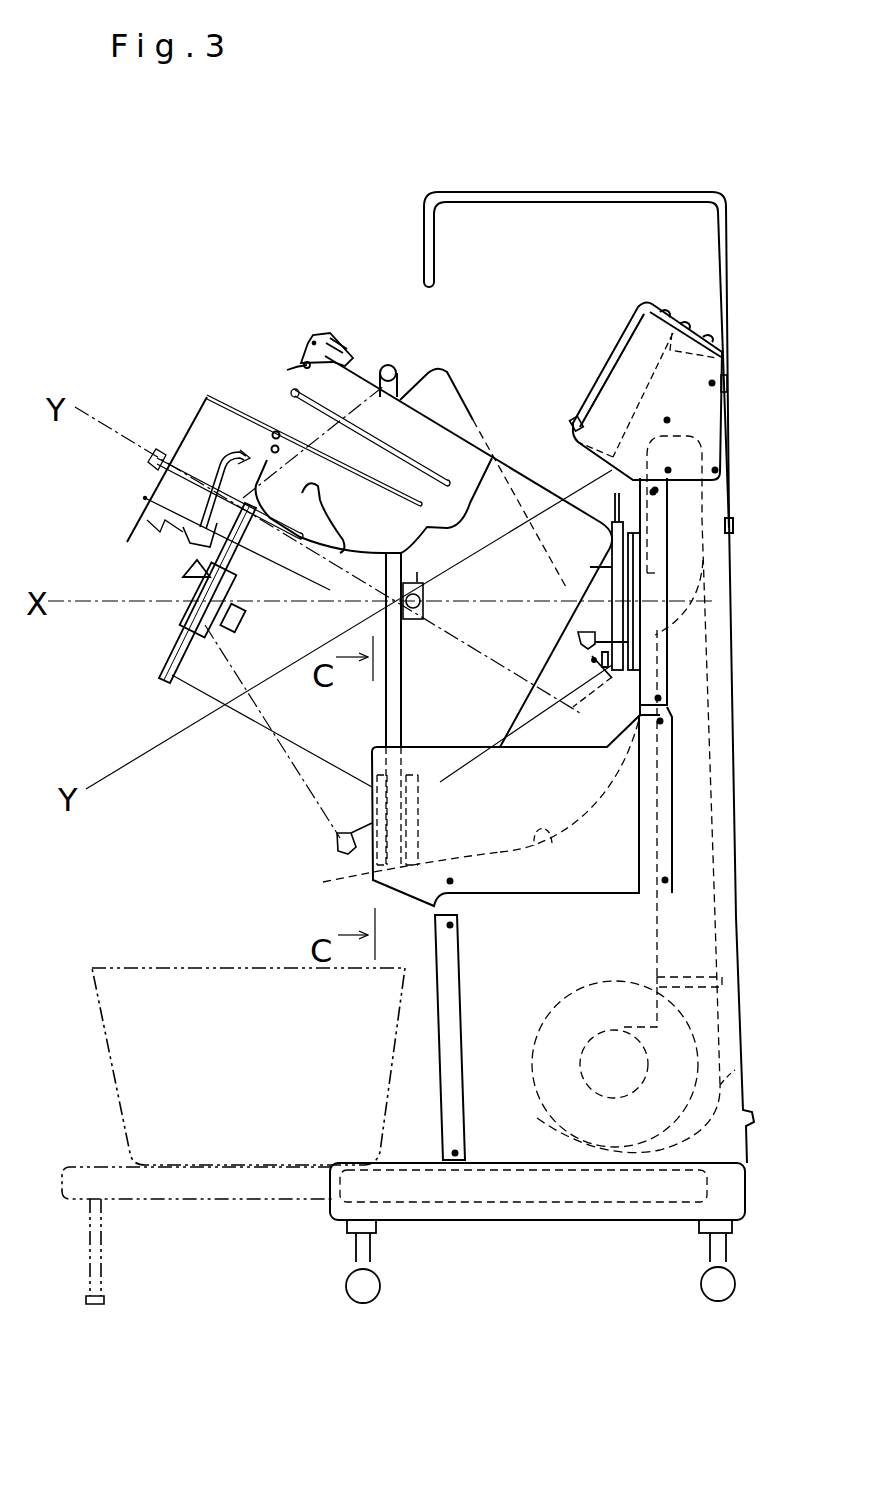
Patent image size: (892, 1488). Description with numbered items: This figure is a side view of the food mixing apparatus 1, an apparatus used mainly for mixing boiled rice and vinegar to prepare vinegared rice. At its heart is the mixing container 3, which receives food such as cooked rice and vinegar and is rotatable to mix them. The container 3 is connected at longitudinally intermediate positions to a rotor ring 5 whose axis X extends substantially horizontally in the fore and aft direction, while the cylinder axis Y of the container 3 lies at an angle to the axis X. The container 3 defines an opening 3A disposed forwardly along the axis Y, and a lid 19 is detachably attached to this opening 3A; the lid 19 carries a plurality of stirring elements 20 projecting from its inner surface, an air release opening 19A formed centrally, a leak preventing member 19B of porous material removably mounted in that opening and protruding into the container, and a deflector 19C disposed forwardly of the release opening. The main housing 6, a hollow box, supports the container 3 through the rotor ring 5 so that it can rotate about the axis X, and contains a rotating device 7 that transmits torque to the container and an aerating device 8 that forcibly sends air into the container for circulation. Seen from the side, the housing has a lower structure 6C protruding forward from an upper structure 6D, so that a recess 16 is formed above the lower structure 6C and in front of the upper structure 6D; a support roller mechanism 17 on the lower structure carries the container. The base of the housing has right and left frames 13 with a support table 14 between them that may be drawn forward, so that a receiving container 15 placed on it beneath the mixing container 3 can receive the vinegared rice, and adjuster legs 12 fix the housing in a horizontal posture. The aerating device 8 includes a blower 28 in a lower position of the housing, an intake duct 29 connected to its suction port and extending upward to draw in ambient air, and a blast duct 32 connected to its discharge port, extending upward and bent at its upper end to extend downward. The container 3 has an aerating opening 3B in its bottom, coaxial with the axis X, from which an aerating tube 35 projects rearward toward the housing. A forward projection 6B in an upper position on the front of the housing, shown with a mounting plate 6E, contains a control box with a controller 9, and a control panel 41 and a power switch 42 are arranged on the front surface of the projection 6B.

The food mixing apparatus 1 is at (72, 246).
The mixing container 3 is at (473, 420).
The opening 3A is at (343, 395).
The aerating opening 3B is at (580, 566).
The rotor ring 5 is at (381, 721).
The main housing 6 is at (428, 984).
The forward projection 6B is at (642, 352).
The lower structure 6C is at (472, 1020).
The upper structure 6D is at (692, 678).
The mounting plate 6E is at (552, 840).
The rotating device 7 is at (430, 840).
The aerating device 8 is at (533, 1115).
The controller 9 is at (728, 380).
The adjuster legs 12 is at (371, 1288).
The right and left frames 13 is at (532, 1207).
The support table 14 is at (345, 1212).
The receiving container 15 is at (112, 968).
The recess 16 is at (527, 452).
The plate 17 is at (395, 877).
The lid 19 is at (294, 392).
The air release opening 19A is at (267, 457).
The leak preventing member 19B is at (282, 537).
The deflector 19C is at (187, 430).
The stirring elements 20 is at (364, 492).
The blower 28 is at (538, 1037).
The intake duct 29 is at (705, 1090).
The blast duct 32 is at (710, 813).
The aerating tube 35 is at (574, 641).
The control panel 41 is at (616, 349).
The power switch 42 is at (576, 421).